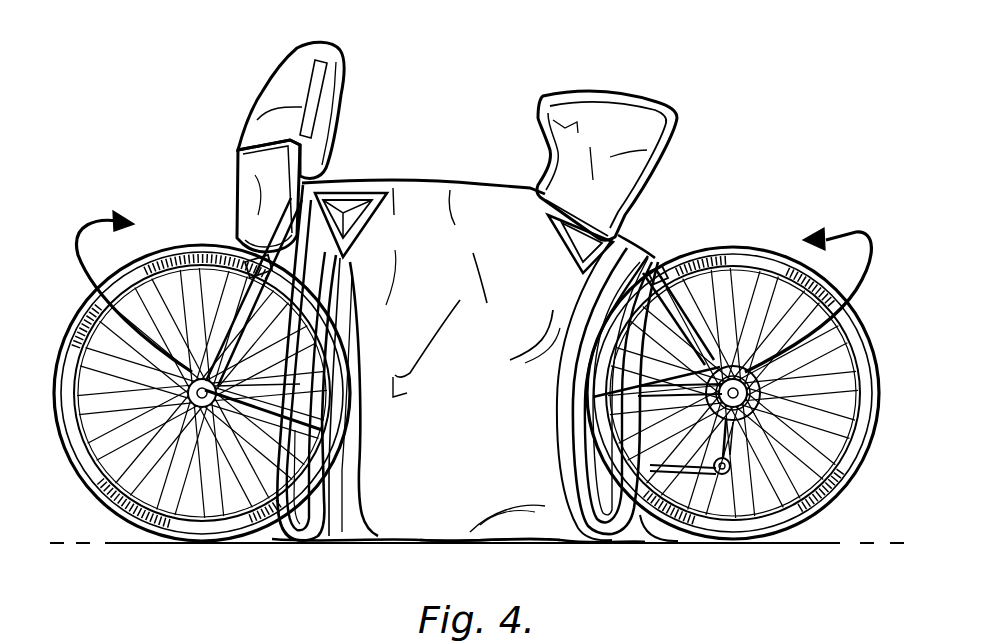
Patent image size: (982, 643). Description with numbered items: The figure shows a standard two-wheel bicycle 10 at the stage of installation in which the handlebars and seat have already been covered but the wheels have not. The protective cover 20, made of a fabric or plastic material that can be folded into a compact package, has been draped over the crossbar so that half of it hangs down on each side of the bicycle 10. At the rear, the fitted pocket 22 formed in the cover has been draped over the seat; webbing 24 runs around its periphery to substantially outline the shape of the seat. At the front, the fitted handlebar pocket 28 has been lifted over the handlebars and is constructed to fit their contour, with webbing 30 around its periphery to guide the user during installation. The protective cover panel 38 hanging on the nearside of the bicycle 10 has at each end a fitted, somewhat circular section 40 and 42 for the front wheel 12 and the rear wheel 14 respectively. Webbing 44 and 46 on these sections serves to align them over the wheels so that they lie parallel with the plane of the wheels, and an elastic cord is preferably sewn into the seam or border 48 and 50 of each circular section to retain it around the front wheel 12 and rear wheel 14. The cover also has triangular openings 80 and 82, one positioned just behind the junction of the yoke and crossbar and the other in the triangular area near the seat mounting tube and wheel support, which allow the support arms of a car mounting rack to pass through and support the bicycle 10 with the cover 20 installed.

The bicycle 10 is at (205, 240).
The front wheel 12 is at (78, 315).
The rear wheel 14 is at (868, 322).
The protective cover 20 is at (477, 439).
The fitted pocket 22 is at (677, 158).
The webbing 24 is at (642, 206).
The fitted handlebar pocket 28 is at (280, 66).
The webbing 30 is at (257, 125).
The protective cover panel 38 is at (525, 545).
The circular section 40 is at (290, 545).
The circular section 42 is at (585, 460).
The webbing 44 is at (325, 545).
The webbing 46 is at (578, 388).
The seam or border 48 is at (330, 465).
The seam or border 50 is at (647, 543).
The triangular opening 80 is at (351, 183).
The triangular opening 82 is at (533, 173).